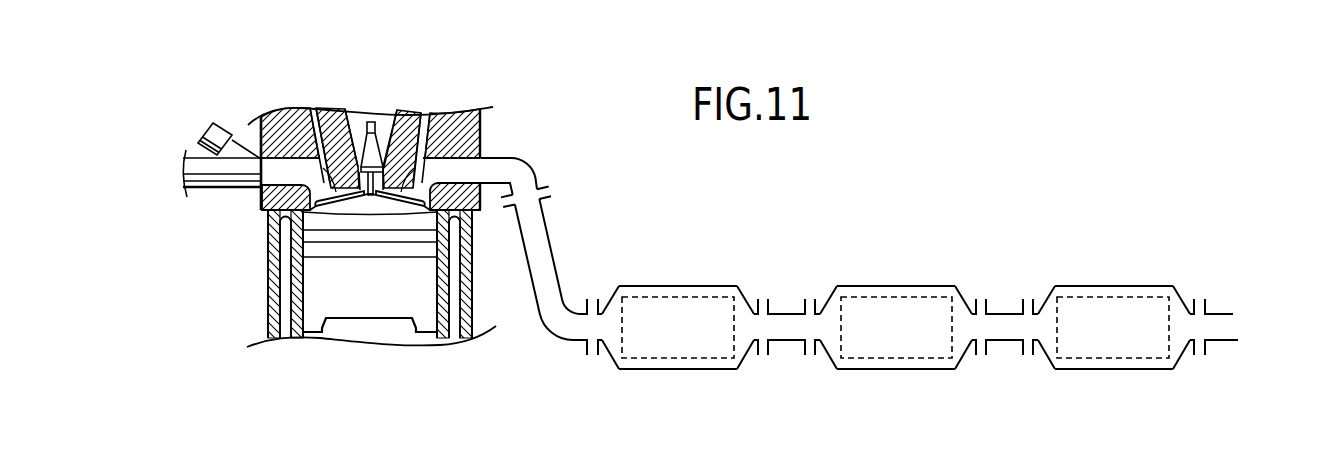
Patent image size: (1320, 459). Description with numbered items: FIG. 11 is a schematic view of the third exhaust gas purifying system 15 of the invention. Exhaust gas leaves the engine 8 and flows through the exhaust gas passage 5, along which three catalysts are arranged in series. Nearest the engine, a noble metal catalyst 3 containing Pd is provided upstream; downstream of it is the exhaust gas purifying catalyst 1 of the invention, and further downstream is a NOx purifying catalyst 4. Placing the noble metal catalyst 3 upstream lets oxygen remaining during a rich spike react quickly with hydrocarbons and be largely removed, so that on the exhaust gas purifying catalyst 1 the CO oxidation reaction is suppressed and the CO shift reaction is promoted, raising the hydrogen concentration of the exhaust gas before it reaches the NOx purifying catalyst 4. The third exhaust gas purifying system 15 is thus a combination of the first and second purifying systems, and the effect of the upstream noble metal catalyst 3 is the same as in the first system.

The engine 8 is at (394, 104).
The exhaust gas passage 5 is at (530, 178).
The third exhaust gas purifying system 15 is at (934, 170).
The noble metal catalyst 3 is at (687, 298).
The exhaust gas purifying catalyst 1 is at (900, 298).
The NOx purifying catalyst 4 is at (1119, 298).